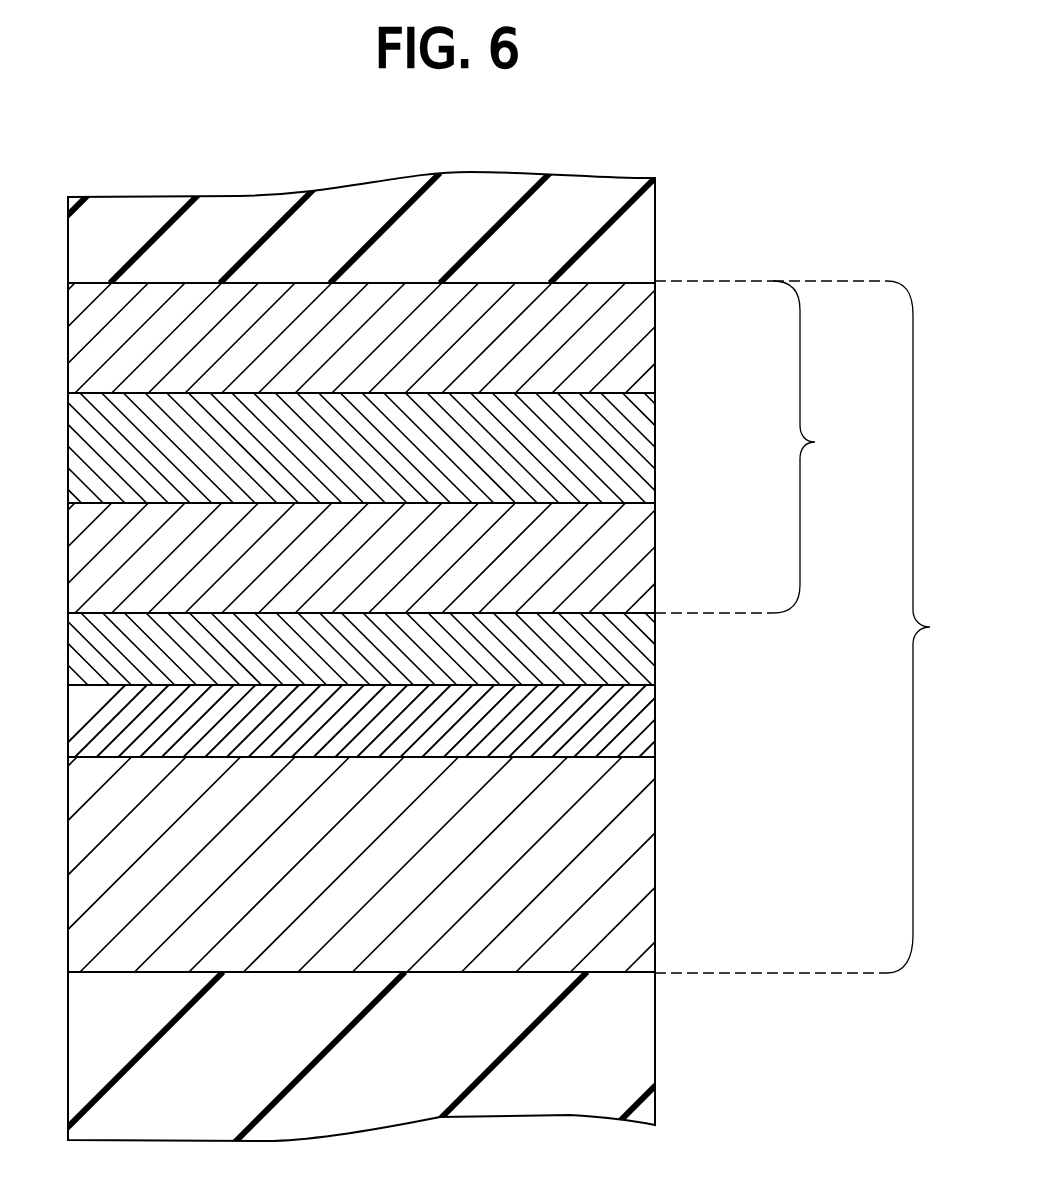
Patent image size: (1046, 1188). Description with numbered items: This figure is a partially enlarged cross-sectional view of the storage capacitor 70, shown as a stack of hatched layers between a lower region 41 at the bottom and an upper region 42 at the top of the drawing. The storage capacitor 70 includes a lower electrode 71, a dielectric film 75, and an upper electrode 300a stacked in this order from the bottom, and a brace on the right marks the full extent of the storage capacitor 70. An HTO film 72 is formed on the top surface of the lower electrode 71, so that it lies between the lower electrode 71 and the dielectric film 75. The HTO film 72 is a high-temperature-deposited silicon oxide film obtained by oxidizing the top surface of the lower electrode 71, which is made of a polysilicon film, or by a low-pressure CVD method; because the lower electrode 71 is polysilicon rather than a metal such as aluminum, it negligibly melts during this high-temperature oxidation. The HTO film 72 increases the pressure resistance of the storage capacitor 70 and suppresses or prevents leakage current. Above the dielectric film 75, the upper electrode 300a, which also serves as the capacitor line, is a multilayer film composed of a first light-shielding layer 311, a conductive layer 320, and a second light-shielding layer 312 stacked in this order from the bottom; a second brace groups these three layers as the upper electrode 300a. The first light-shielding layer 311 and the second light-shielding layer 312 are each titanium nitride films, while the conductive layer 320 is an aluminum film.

The second electrode (upper electrode) 42 is at (620, 248).
The second light-shielding layer 312 is at (620, 336).
The conductive layer 320 is at (620, 456).
The first light-shielding layer 311 is at (620, 562).
The dielectric film 75 is at (620, 662).
The HTO film 72 is at (620, 732).
The lower electrode 71 is at (620, 870).
The first electrode (lower electrode) 41 is at (620, 1062).
The upper electrode 300a is at (773, 447).
The storage capacitor 70 is at (811, 627).